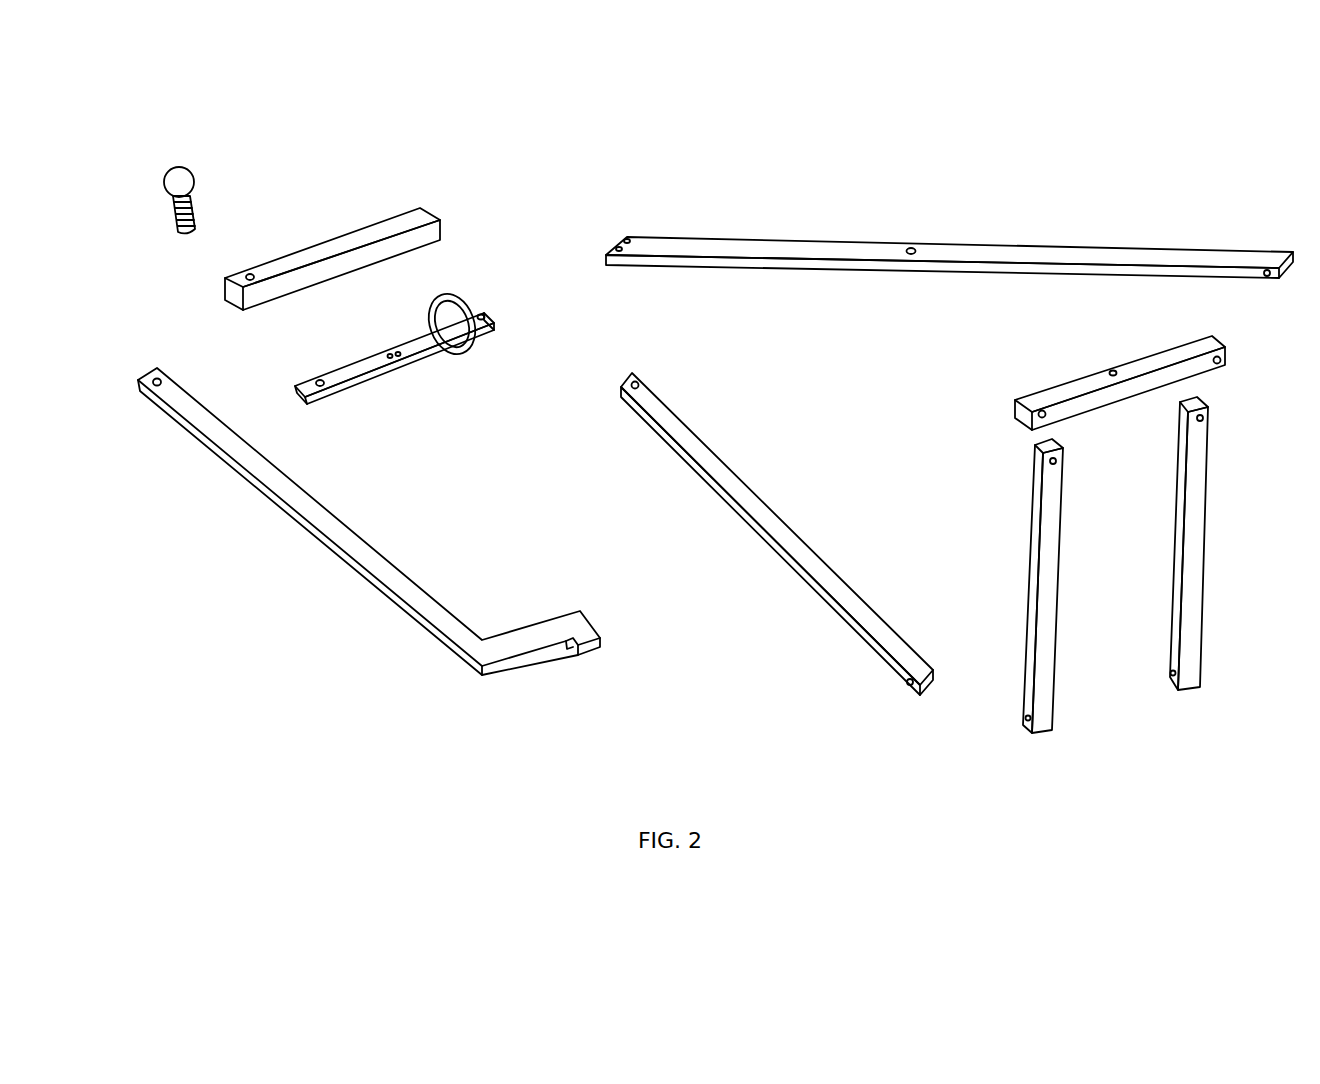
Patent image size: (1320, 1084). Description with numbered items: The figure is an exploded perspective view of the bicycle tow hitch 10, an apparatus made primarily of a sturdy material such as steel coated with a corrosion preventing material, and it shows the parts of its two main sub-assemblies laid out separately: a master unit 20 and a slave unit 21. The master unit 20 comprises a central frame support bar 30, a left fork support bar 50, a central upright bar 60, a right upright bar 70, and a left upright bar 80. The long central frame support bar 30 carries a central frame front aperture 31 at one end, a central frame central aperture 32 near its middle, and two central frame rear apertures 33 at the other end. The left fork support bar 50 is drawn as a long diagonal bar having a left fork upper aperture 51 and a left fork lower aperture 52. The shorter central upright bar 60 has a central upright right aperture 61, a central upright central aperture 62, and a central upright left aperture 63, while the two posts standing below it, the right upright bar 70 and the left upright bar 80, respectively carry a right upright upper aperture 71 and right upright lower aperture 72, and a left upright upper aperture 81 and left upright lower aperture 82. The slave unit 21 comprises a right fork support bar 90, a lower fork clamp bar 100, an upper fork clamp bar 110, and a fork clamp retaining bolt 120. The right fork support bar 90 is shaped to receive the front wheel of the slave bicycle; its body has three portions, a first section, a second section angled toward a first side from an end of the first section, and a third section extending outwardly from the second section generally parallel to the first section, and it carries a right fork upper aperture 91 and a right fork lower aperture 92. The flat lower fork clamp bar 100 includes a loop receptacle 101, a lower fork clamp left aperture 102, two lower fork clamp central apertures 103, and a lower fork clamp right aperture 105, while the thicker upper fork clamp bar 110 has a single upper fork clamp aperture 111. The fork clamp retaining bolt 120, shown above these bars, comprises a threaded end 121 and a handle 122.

The bicycle tow hitch 10 is at (914, 468).
The master unit 20 is at (1123, 573).
The slave unit 21 is at (363, 531).
The central frame support bar 30 is at (942, 258).
The central frame front aperture 31 is at (1267, 277).
The central frame central aperture 32 is at (910, 249).
The central frame rear apertures 33 is at (619, 247).
The left fork support bar 50 is at (769, 519).
The left fork upper aperture 51 is at (633, 373).
The left fork lower aperture 52 is at (907, 681).
The central upright bar 60 is at (1149, 379).
The central upright right aperture 61 is at (1047, 415).
The central upright central aperture 62 is at (1113, 372).
The central upright left aperture 63 is at (1222, 360).
The right upright bar 70 is at (1040, 591).
The right upright upper aperture 71 is at (1057, 462).
The right upright lower aperture 72 is at (1025, 718).
The left upright bar 80 is at (1189, 543).
The left upright upper aperture 81 is at (1203, 418).
The left upright lower aperture 82 is at (1170, 673).
The right fork support bar 90 is at (363, 517).
The right fork upper aperture 91 is at (155, 378).
The right fork lower aperture 92 is at (565, 648).
The lower fork clamp bar 100 is at (399, 351).
The loop receptacle 101 is at (472, 352).
The lower fork clamp left aperture 102 is at (484, 316).
The lower fork clamp central apertures 103 is at (398, 351).
The lower fork clamp right aperture 105 is at (318, 382).
The upper fork clamp bar 110 is at (326, 243).
The upper fork clamp aperture 111 is at (252, 268).
The fork clamp retaining bolt 120 is at (160, 173).
The threaded end 121 is at (197, 210).
The handle 122 is at (176, 167).